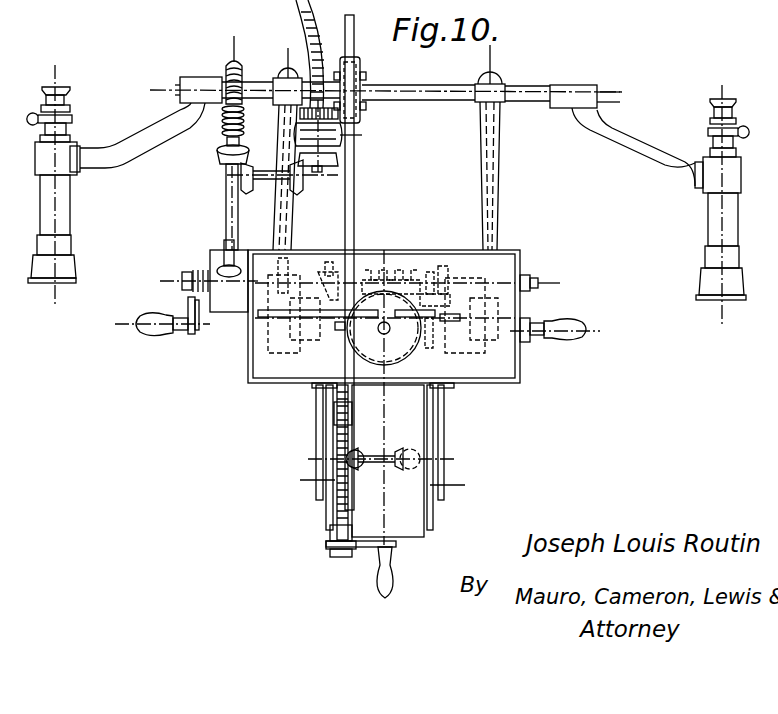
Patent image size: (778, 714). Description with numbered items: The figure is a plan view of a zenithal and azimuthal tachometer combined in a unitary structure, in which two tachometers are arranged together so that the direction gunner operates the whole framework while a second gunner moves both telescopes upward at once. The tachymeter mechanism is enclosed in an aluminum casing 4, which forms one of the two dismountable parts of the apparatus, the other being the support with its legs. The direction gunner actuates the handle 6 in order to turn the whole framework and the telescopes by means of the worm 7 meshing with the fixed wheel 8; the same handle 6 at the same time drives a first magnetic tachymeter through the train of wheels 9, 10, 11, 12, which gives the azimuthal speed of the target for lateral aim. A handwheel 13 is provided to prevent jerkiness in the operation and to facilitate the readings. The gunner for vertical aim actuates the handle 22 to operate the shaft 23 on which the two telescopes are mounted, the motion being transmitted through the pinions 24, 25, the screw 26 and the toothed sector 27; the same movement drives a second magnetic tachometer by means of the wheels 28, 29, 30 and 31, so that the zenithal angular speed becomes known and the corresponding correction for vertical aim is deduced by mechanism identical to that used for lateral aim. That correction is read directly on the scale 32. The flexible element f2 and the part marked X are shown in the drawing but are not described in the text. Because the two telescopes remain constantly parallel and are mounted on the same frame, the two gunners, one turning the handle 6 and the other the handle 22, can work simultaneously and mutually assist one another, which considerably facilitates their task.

The shaft 23 is at (441, 100).
The toothed sector 27 is at (243, 73).
The screw 26 is at (220, 131).
The flexible shaft f2 is at (317, 54).
The wheel 30 is at (340, 274).
The aluminum casing 4 is at (384, 319).
The handwheel 13 is at (384, 397).
The worm 7 is at (385, 273).
The wheel 11 is at (431, 272).
The wheel 9 is at (444, 267).
The wheel 10 is at (441, 298).
The wheel 12 is at (434, 340).
The wheel 29 is at (323, 288).
The wheel 31 is at (337, 326).
The wheel 28 is at (327, 264).
The pinion 24 is at (242, 290).
The pinion 25 is at (221, 270).
The handle 22 is at (150, 318).
The handle 6 is at (568, 326).
The fixed wheel 8 is at (388, 366).
The scale 32 is at (330, 508).
The crank handle X is at (388, 588).